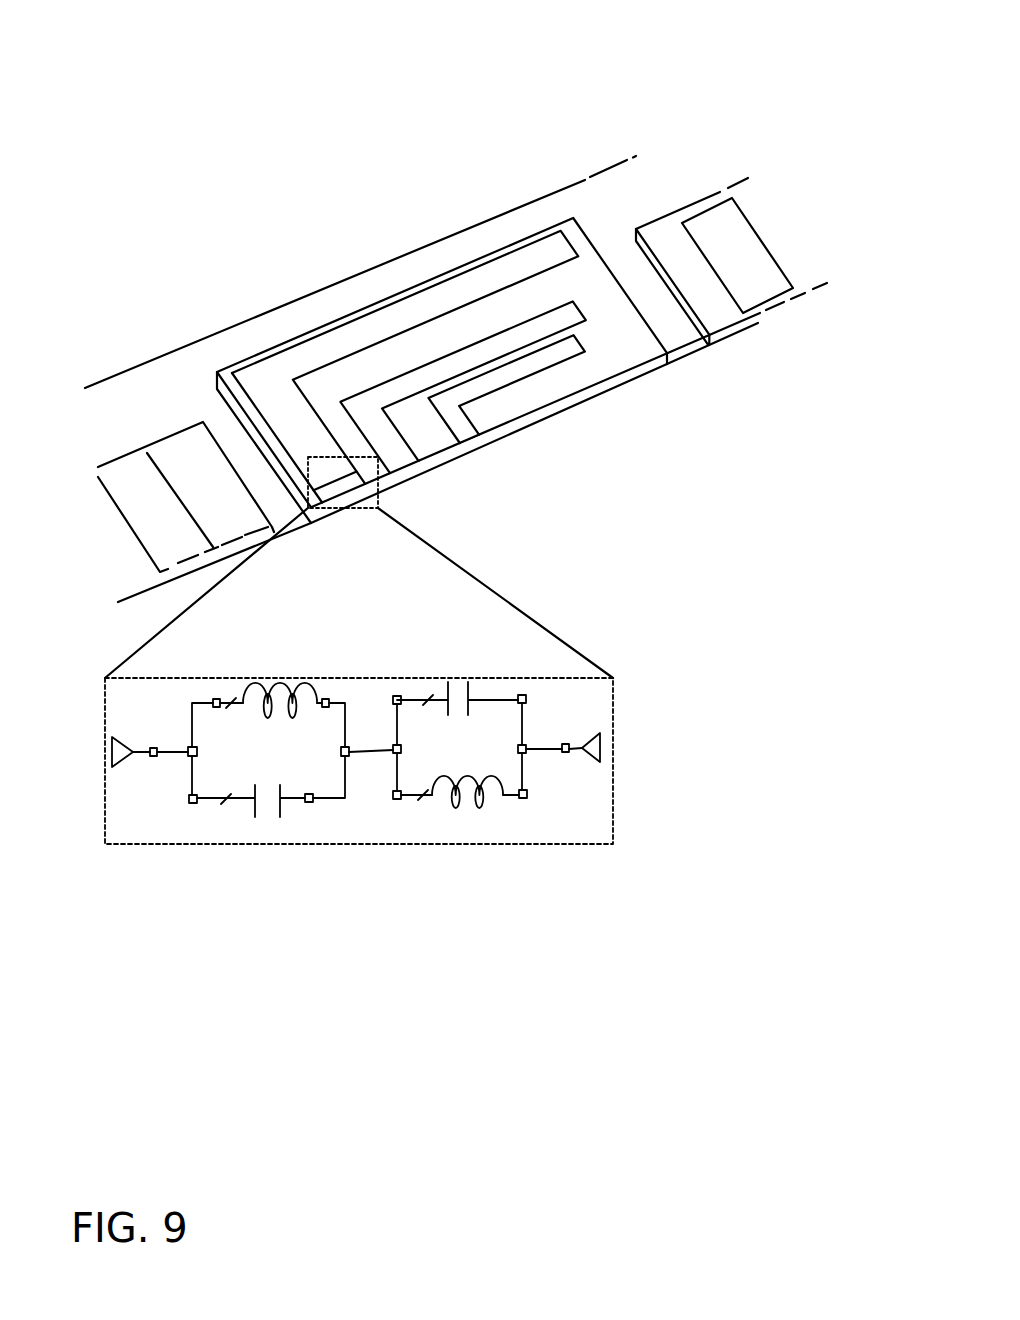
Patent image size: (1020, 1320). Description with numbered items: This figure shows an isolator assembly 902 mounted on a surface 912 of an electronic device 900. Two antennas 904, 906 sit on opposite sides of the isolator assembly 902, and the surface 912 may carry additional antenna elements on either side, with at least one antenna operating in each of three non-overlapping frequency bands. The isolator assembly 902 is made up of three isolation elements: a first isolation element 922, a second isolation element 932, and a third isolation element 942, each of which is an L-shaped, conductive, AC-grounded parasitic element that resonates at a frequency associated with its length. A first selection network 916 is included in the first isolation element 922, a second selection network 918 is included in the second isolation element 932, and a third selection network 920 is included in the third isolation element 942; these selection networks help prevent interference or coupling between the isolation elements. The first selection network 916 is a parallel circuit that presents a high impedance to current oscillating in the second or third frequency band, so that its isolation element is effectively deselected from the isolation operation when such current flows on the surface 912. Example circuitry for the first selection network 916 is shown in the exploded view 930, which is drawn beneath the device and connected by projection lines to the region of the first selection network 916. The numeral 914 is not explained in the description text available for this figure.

The electronic device 900 is at (141, 42).
The isolator assembly 902 is at (417, 398).
The antenna 904 is at (195, 462).
The antenna 906 is at (677, 243).
The surface 912 is at (507, 233).
The antenna carrier 914 is at (235, 385).
The first selection network 916 is at (342, 488).
The second selection network 918 is at (398, 470).
The third selection network 920 is at (466, 435).
The first isolation element 922 is at (333, 345).
The exploded view 930 is at (104, 737).
The second isolation element 932 is at (392, 396).
The third isolation element 942 is at (507, 370).